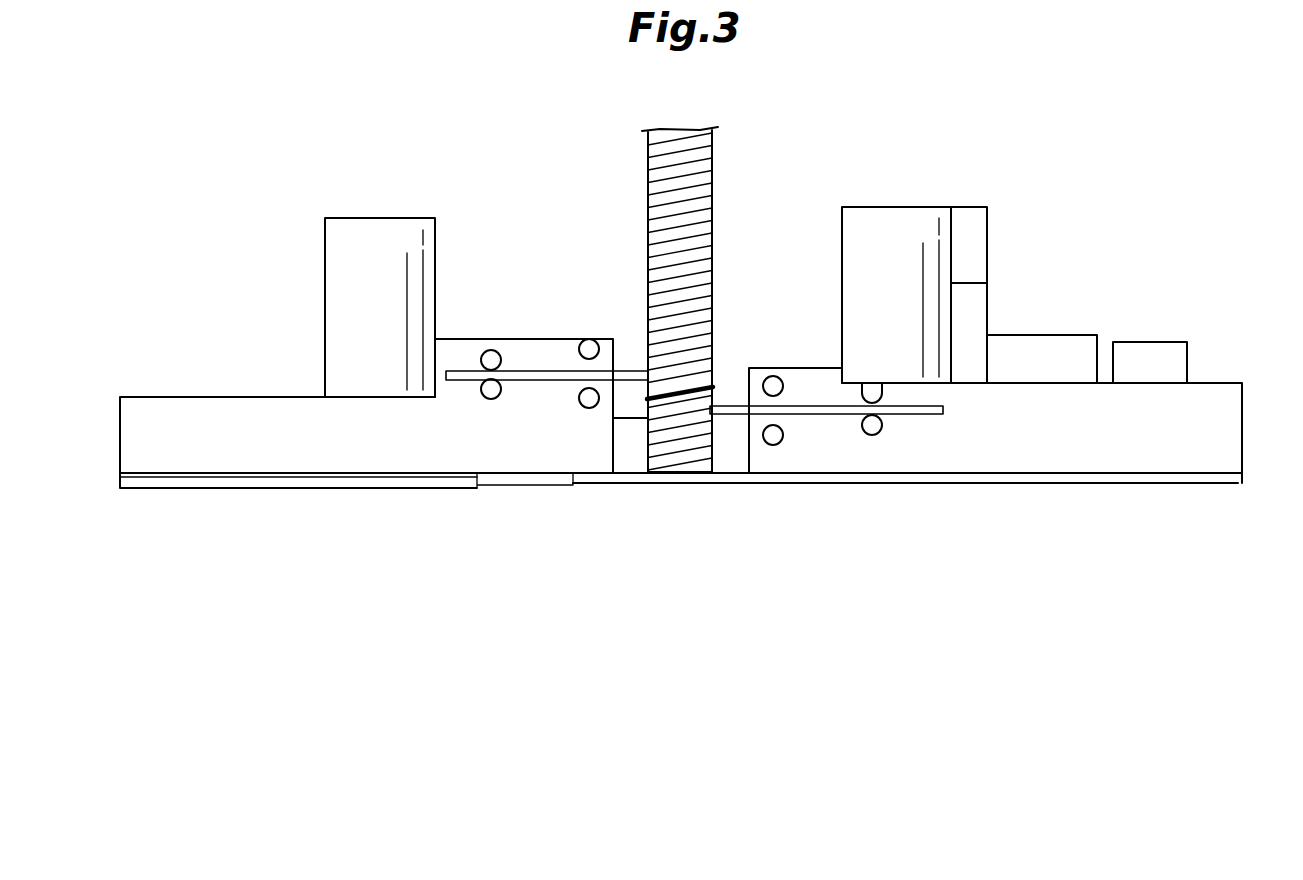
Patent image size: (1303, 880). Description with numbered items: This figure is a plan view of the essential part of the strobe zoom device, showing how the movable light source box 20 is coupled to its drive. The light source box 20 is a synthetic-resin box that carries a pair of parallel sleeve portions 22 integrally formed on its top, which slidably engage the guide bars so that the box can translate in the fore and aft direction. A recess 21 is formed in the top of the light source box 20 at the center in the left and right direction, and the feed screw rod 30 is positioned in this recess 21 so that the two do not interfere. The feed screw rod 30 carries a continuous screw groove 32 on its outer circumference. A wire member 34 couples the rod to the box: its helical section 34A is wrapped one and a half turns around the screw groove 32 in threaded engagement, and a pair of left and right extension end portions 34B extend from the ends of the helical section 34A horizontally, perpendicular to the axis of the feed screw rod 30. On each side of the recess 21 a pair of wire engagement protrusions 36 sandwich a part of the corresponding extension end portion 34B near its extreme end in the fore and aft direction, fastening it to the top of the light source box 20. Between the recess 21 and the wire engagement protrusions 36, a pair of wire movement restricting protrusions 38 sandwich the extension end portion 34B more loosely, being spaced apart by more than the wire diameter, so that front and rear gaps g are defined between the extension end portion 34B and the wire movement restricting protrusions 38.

The light source box 20 is at (1214, 384).
The recess 21 is at (727, 457).
The sleeve portions 22 is at (335, 247).
The feed screw rod 30 is at (703, 178).
The screw groove 32 is at (710, 243).
The wire member 34 is at (730, 368).
The helical section 34A is at (670, 403).
The extension end portions 34B is at (527, 381).
The wire engagement protrusions 36 is at (496, 388).
The wire movement restricting protrusions 38 is at (597, 352).
The gaps g is at (593, 362).